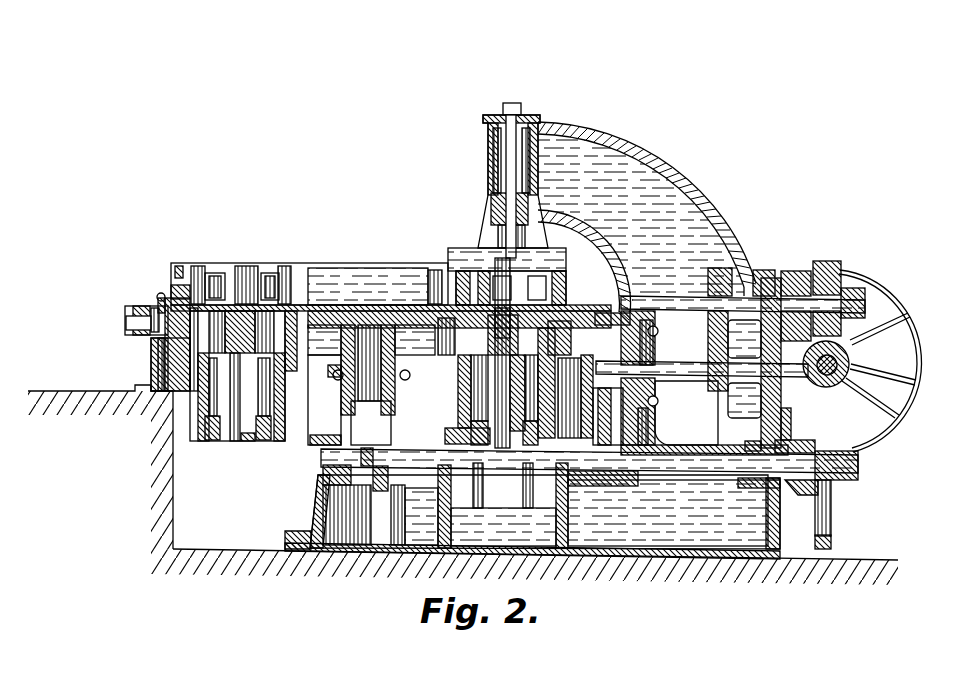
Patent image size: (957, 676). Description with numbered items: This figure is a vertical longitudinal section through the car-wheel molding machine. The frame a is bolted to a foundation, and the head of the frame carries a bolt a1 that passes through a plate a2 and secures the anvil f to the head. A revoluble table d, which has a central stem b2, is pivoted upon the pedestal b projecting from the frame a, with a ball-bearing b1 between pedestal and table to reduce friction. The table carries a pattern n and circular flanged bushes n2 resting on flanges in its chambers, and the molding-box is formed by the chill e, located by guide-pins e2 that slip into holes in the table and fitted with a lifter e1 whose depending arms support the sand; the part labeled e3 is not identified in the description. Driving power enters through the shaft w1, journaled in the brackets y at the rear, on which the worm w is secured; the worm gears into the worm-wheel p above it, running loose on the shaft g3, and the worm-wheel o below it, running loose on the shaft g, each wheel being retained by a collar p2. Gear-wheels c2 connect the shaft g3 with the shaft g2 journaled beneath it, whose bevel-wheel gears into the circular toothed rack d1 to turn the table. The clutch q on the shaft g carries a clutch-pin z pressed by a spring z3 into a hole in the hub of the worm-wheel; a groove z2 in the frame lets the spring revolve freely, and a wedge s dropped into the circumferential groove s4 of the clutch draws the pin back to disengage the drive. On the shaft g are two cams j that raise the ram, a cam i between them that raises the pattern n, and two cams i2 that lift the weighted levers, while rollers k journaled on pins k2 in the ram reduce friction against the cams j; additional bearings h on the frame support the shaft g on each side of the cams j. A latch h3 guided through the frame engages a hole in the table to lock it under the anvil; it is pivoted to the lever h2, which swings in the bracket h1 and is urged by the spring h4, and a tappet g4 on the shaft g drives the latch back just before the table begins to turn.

The frame a is at (647, 223).
The bolt a1 is at (514, 96).
The plate a2 is at (486, 104).
The pedestal b is at (371, 423).
The ball-bearing b1 is at (324, 400).
The central stem b2 is at (371, 370).
The gear-wheels c2 is at (718, 351).
The revoluble table d is at (117, 306).
The circular toothed rack d1 is at (145, 296).
The chill e is at (155, 240).
The lifter e1 is at (300, 262).
The guide-pins e2 is at (152, 286).
The casing block e3 is at (143, 348).
The anvil f is at (470, 240).
The shaft g is at (589, 461).
The shaft g2 is at (700, 355).
The shaft g3 is at (650, 290).
The tappet g4 is at (640, 475).
The bearings h is at (437, 440).
The bracket h1 is at (667, 399).
The lever h2 is at (282, 350).
The latch h3 is at (663, 339).
The spring h4 is at (630, 415).
The cam i is at (502, 353).
The cams i2 is at (365, 470).
The lifting-cams j is at (502, 481).
The rollers k is at (205, 434).
The pins k2 is at (262, 432).
The pattern n is at (496, 316).
The circular flanged bushes n2 is at (403, 367).
The worm-wheel o is at (826, 495).
The worm-wheel p is at (822, 262).
The collar p2 is at (860, 282).
The clutch q is at (800, 488).
The wedge s is at (515, 378).
The circumferential groove s4 is at (796, 290).
The worm w is at (830, 378).
The shaft w1 is at (842, 357).
The brackets y is at (709, 363).
The clutch-pin z is at (795, 434).
The groove z2 is at (770, 262).
The spring z3 is at (770, 422).